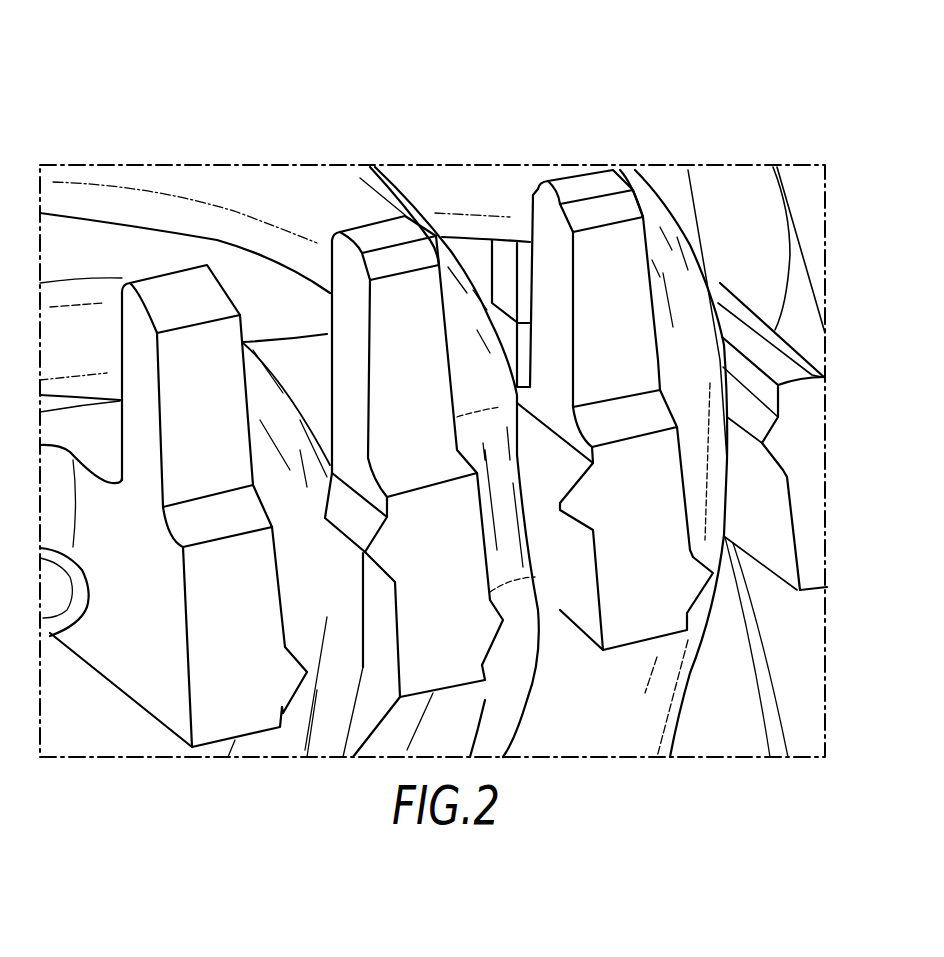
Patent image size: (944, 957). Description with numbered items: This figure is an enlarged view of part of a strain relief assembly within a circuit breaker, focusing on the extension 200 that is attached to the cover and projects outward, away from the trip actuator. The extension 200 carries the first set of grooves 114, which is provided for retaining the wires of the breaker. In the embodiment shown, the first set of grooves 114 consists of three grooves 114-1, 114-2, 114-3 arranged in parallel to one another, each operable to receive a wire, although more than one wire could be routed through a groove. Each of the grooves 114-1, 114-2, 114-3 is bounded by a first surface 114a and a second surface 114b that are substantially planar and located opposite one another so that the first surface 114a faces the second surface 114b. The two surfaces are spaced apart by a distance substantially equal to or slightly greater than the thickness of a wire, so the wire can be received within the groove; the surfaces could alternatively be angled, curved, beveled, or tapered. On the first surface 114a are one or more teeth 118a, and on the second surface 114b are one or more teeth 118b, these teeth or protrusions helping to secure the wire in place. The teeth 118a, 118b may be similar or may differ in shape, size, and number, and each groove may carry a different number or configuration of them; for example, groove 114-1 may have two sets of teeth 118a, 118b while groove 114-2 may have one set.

The extension 200 is at (753, 122).
The first set of grooves 114 is at (84, 681).
The groove 114-1 is at (238, 277).
The groove 114-2 is at (508, 262).
The groove 114-3 is at (726, 270).
The first surface 114a is at (245, 341).
The second surface 114b is at (327, 247).
The teeth 118a is at (305, 672).
The teeth 118b is at (347, 512).